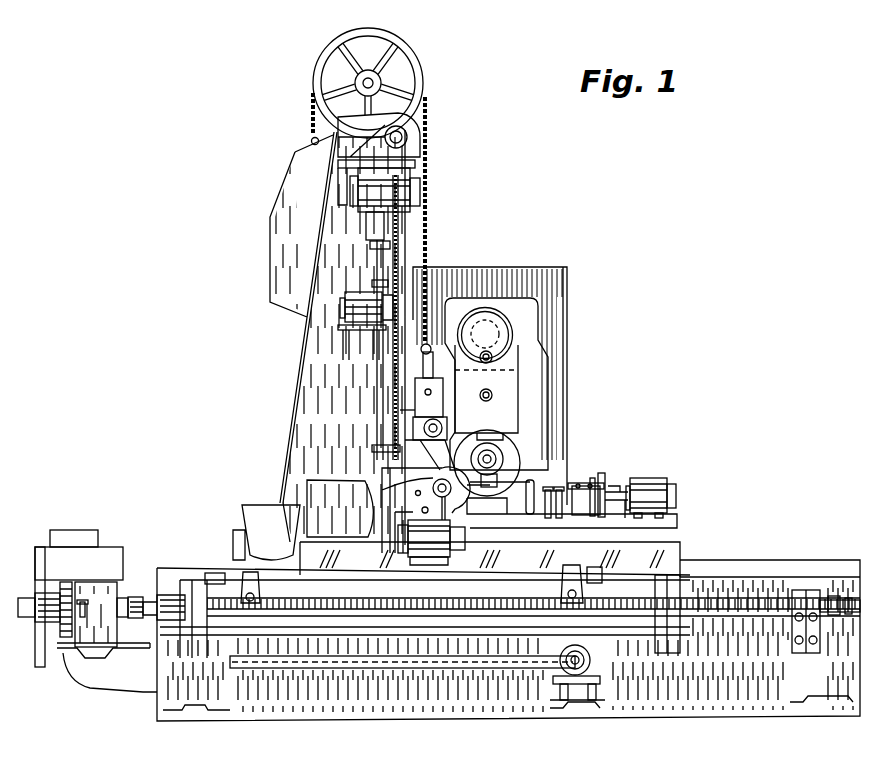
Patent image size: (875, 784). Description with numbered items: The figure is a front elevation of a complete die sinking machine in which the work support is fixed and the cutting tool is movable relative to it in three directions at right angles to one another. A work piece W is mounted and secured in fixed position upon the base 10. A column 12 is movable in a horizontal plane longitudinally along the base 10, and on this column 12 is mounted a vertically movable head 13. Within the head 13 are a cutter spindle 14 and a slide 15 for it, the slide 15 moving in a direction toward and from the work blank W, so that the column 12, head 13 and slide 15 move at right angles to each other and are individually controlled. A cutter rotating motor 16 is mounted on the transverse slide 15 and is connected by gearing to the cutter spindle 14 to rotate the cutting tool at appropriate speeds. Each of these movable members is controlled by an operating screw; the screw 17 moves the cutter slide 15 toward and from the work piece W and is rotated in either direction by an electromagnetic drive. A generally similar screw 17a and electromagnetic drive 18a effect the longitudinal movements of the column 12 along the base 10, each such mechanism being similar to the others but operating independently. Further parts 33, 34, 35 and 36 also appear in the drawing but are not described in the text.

The base 10 is at (742, 707).
The column 12 is at (305, 408).
The head 13 is at (445, 437).
The cutter spindle 14 is at (500, 460).
The slide 15 is at (525, 382).
The cutter rotating motor 16 is at (478, 314).
The operating screw 17 is at (436, 490).
The screw 17a is at (210, 602).
The electromagnetic drive 18a is at (104, 592).
The roller 33 is at (593, 650).
The feed motor 34 is at (342, 298).
The drive motor 35 is at (662, 477).
The guide bar 36 is at (455, 655).
The work piece W is at (567, 308).